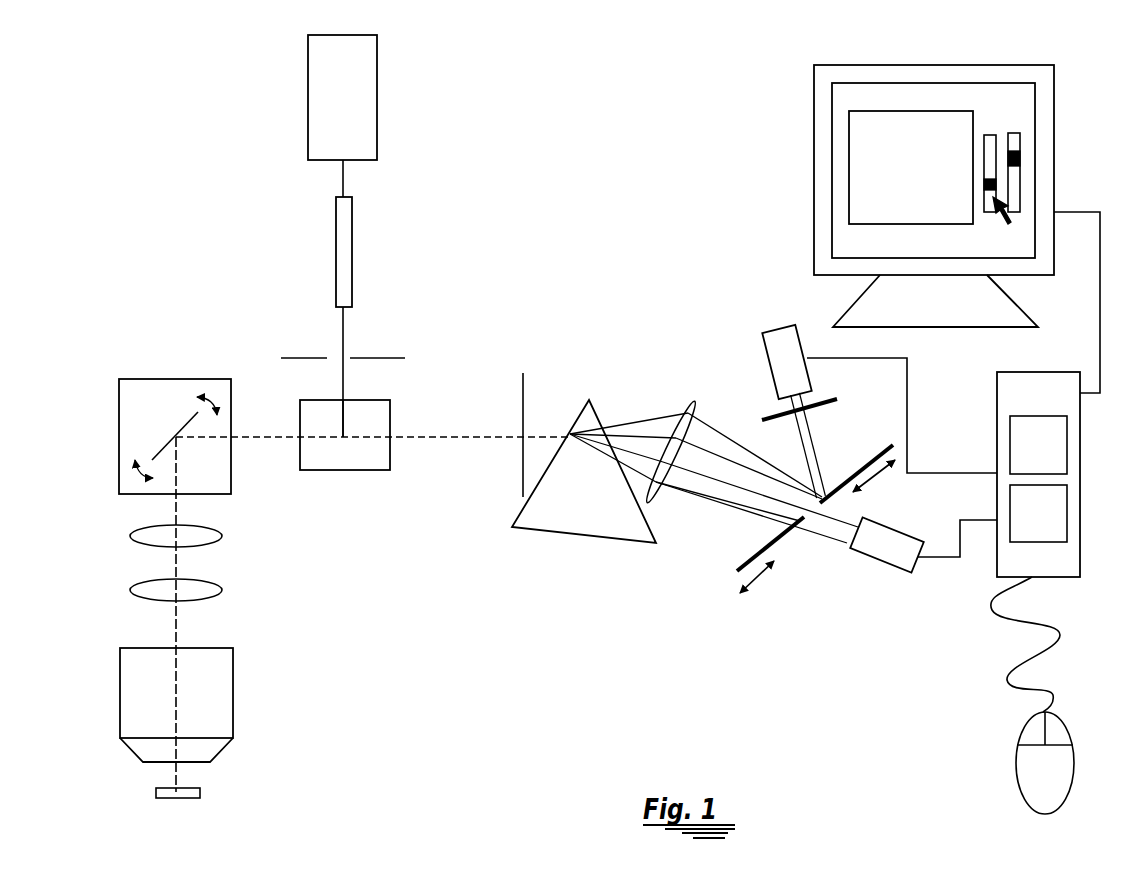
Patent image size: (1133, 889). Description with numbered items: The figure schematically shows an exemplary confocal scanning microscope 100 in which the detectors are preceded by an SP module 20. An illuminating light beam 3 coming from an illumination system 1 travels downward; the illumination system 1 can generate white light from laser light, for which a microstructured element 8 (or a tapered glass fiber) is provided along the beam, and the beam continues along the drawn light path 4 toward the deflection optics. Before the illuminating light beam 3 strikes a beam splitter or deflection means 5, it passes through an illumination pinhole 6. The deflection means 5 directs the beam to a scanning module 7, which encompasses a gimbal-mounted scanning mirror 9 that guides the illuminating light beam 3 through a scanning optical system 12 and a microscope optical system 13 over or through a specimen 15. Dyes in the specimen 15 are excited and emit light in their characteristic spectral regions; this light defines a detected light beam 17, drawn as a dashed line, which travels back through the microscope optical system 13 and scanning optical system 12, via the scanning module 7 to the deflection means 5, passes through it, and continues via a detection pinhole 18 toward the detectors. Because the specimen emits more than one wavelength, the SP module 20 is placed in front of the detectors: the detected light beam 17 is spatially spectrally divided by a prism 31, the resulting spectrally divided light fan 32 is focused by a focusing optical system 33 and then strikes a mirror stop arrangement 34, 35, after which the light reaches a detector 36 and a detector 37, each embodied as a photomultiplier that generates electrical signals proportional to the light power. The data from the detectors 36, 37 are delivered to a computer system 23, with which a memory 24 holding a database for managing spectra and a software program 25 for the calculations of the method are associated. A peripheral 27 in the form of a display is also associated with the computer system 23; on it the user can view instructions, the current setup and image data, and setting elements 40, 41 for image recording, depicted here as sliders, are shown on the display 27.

The illumination system 1 is at (366, 75).
The illuminating light beam 3 is at (343, 176).
The optical fiber 4 is at (343, 330).
The deflection means 5 is at (322, 465).
The illumination pinhole 6 is at (296, 358).
The scanning module 7 is at (141, 403).
The microstructured element 8 is at (338, 260).
The scanning mirror 9 is at (163, 443).
The scanning optical system 12 is at (150, 532).
The microscope optical system 13 is at (143, 675).
The specimen 15 is at (165, 790).
The detected light beam 17 is at (397, 434).
The detection pinhole 18 is at (523, 393).
The SP module 20 is at (722, 393).
The computer system 23 is at (997, 403).
The memory 24 is at (1052, 458).
The software program 25 is at (1052, 527).
The peripheral 27 is at (814, 143).
The prism 31 is at (583, 528).
The spectrally divided light fan 32 is at (628, 430).
The focusing optical system 33 is at (648, 500).
The mirror stop arrangement 34 is at (783, 533).
The mirror stop arrangement 35 is at (852, 477).
The detector 36 is at (860, 547).
The detector 37 is at (772, 338).
The setting element 40 is at (990, 135).
The setting element 41 is at (1020, 137).
The confocal scanning microscope 100 is at (418, 326).